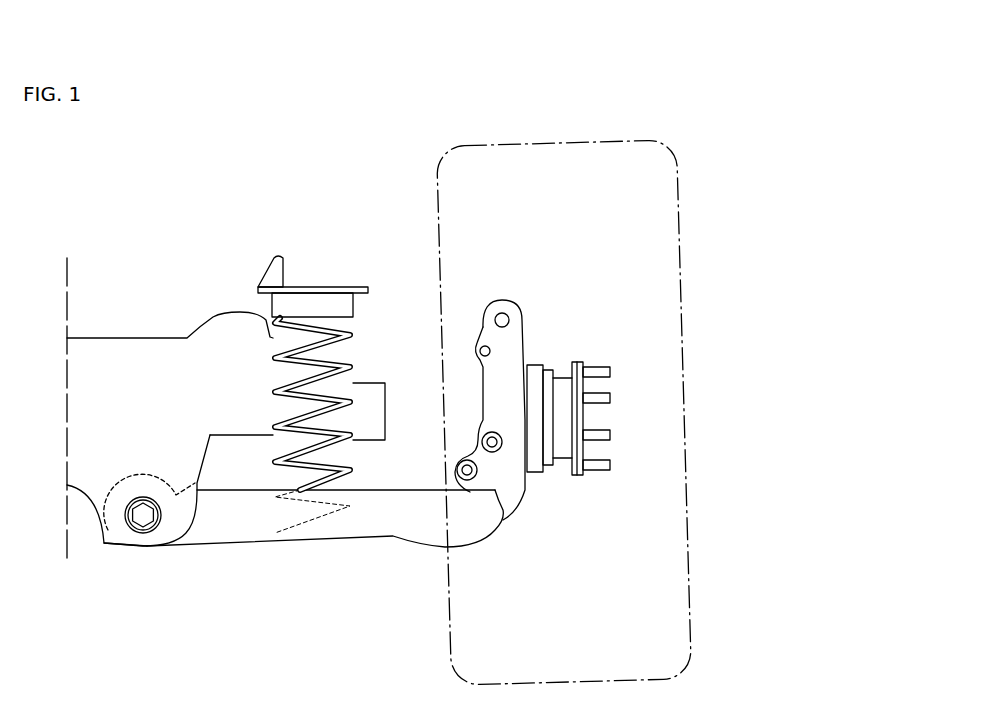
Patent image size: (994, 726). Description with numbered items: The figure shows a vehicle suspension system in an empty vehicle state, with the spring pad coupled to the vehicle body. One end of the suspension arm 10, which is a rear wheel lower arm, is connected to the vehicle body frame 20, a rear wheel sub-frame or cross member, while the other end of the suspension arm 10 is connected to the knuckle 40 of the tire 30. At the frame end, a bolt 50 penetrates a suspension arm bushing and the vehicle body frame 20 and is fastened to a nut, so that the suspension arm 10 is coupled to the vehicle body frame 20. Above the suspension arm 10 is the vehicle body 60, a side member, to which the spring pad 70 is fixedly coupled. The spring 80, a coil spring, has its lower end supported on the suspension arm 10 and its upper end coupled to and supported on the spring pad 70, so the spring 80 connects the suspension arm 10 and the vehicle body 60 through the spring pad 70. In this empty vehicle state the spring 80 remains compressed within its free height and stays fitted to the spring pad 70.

The suspension arm 10 is at (235, 527).
The vehicle body frame 20 is at (139, 353).
The tire 30 is at (680, 257).
The knuckle 40 is at (512, 417).
The bolt 50 is at (140, 522).
The vehicle body 60 is at (330, 290).
The spring pad 70 is at (280, 303).
The spring 80 is at (337, 371).